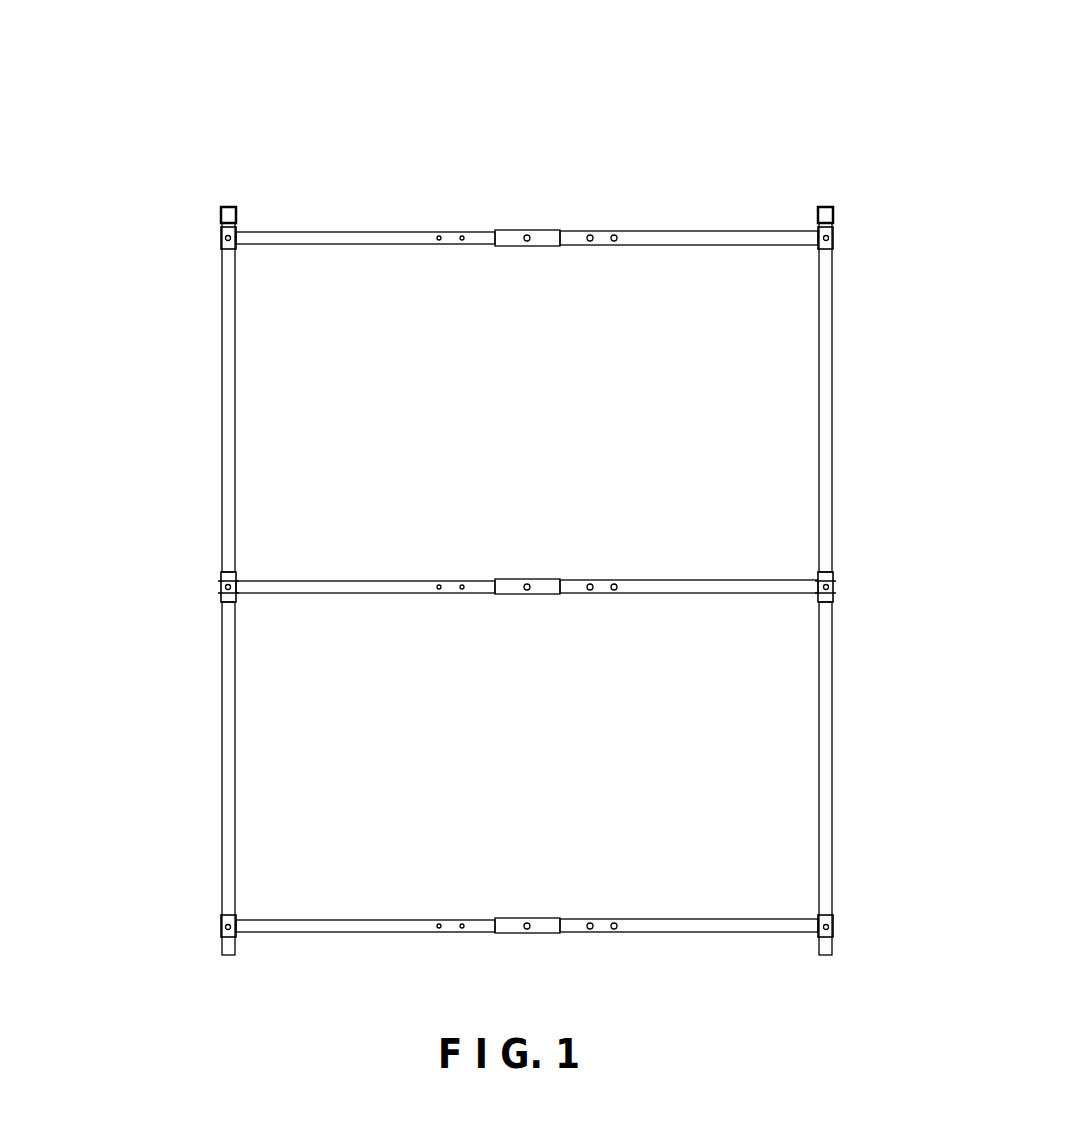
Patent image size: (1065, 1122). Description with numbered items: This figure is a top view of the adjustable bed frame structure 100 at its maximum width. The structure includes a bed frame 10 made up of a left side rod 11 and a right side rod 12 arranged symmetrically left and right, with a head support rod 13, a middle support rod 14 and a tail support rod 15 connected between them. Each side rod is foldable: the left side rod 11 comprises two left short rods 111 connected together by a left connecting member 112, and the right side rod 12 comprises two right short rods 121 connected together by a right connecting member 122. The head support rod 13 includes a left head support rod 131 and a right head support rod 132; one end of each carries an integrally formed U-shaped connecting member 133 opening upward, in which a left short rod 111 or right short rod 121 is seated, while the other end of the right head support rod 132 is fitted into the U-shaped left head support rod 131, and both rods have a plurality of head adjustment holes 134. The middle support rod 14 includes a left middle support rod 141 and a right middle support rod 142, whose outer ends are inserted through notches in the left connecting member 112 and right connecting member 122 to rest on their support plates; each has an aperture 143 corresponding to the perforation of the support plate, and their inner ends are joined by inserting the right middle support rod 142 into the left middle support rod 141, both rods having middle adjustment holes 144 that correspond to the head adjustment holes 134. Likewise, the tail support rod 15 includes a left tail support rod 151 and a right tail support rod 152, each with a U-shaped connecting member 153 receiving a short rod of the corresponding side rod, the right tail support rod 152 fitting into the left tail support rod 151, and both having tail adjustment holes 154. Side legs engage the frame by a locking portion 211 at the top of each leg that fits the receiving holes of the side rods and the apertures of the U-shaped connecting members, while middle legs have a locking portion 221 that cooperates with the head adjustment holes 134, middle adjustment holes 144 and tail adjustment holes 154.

The adjustable bed frame structure 100 is at (743, 122).
The bed frame 10 is at (790, 320).
The left side rod 11 is at (125, 470).
The left short rods 111 is at (228, 453).
The left connecting member 112 is at (222, 583).
The right side rod 12 is at (690, 415).
The right short rods 121 is at (822, 405).
The right connecting member 122 is at (818, 578).
The head support rod 13 is at (620, 87).
The left head support rod 131 is at (358, 238).
The right head support rod 132 is at (637, 237).
The U-shaped connecting member 133 is at (232, 232).
The head adjustment holes 134 is at (439, 237).
The middle support rod 14 is at (610, 470).
The left middle support rod 141 is at (373, 583).
The right middle support rod 142 is at (608, 583).
The aperture 143 is at (822, 588).
The middle adjustment holes 144 is at (525, 583).
The tail support rod 15 is at (657, 800).
The left tail support rod 151 is at (372, 918).
The right tail support rod 152 is at (650, 918).
The U-shaped connecting member 153 is at (222, 920).
The tail adjustment holes 154 is at (528, 918).
The locking portion 211 is at (224, 237).
The locking portion 221 is at (527, 245).